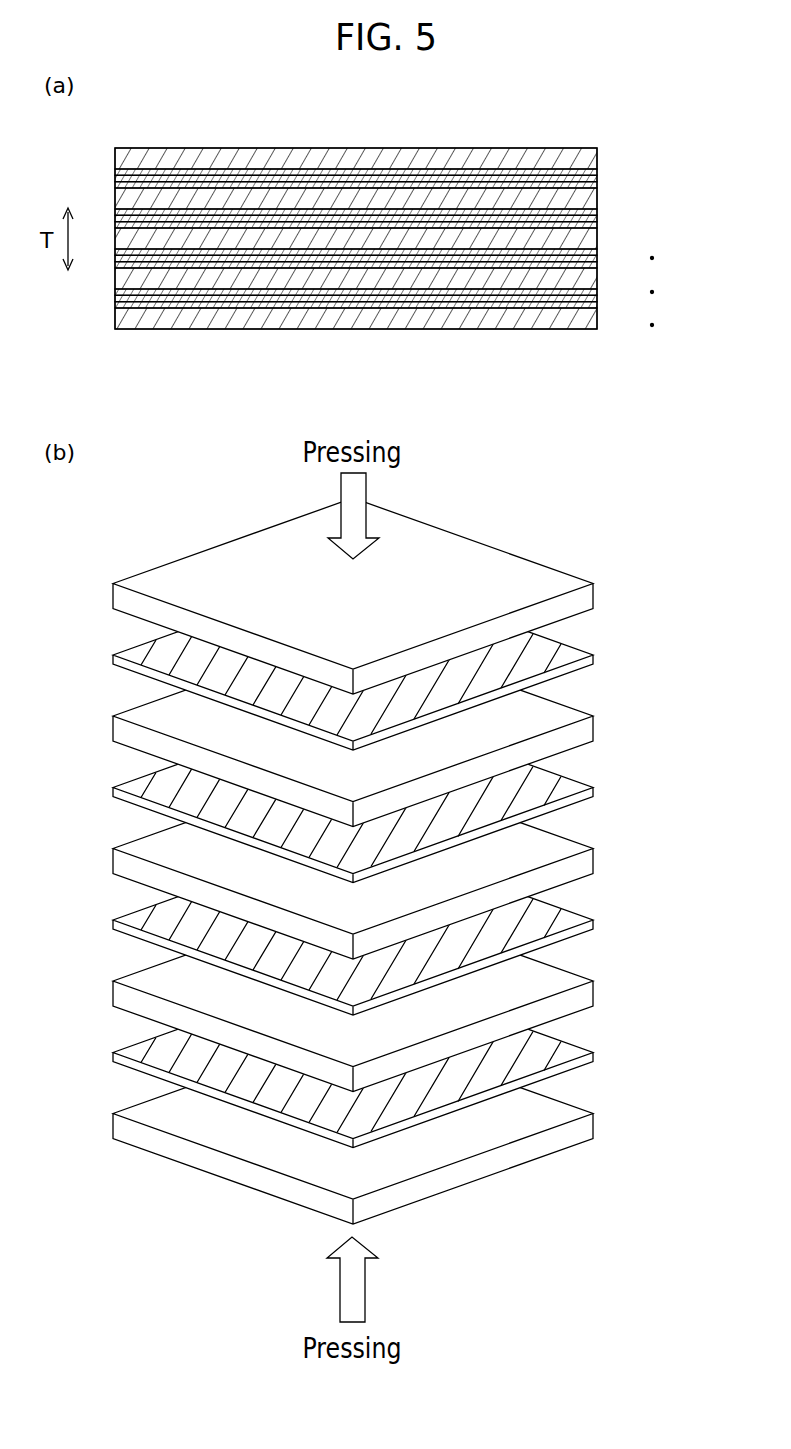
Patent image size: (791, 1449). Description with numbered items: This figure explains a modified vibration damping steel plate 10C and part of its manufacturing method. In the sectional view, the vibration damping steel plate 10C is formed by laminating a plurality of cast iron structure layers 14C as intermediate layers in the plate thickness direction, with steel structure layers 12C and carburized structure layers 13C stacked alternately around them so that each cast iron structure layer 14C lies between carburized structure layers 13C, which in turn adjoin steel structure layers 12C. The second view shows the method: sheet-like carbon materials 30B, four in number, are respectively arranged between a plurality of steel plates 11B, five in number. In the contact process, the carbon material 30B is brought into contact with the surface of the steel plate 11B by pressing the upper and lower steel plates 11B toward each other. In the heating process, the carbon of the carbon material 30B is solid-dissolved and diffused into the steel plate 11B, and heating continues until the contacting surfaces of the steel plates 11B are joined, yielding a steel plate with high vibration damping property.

The vibration damping steel plate 10C is at (434, 222).
The steel structure layer 12C is at (598, 150).
The carburized structure layer 13C is at (598, 171).
The cast iron structure layer 14C is at (396, 235).
The steel plate 11B is at (597, 596).
The carbon material 30B is at (597, 660).